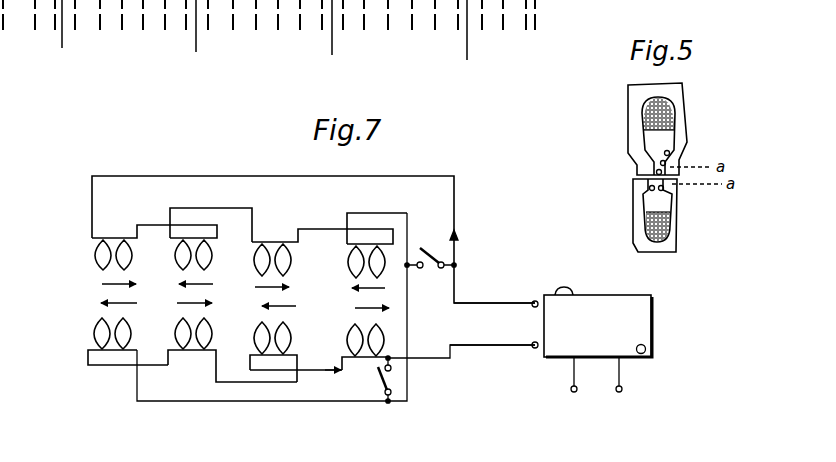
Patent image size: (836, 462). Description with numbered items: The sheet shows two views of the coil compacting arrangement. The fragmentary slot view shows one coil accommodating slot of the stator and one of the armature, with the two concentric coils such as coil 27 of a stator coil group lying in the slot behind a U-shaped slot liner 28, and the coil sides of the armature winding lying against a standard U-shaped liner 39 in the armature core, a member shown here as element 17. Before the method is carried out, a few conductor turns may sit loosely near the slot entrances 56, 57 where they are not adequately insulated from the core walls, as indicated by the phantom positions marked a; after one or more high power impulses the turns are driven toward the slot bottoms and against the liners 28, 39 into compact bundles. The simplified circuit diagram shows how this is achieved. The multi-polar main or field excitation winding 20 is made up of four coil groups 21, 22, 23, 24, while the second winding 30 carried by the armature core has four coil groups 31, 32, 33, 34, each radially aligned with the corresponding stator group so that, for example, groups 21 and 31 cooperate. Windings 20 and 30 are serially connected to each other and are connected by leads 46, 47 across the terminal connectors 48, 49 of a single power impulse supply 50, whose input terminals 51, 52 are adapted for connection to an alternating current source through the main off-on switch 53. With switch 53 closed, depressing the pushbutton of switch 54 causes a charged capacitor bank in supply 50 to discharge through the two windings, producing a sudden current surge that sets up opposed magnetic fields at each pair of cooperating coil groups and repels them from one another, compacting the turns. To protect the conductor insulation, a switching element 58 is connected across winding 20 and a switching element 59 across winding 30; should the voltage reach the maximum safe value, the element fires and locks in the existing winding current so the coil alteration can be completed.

In FIG. 5, the lower block / receiving member 17 is at (636, 186).
In FIG. 7, the main or field excitation winding 20 is at (86, 238).
In FIG. 7, the coil group 21 is at (115, 238).
In FIG. 7, the coil group 22 is at (192, 240).
In FIG. 7, the coil group 23 is at (274, 242).
In FIG. 7, the coil group 24 is at (367, 244).
In FIG. 5, the concentric coil 27 is at (676, 113).
In FIG. 5, the slot liner 28 is at (675, 136).
In FIG. 7, the second winding 30 is at (86, 335).
In FIG. 7, the coil group 31 is at (112, 352).
In FIG. 7, the coil group 32 is at (194, 352).
In FIG. 7, the coil group 33 is at (277, 357).
In FIG. 7, the coil group 34 is at (362, 359).
In FIG. 5, the slot liner 39 is at (668, 218).
In FIG. 7, the lead 46 is at (481, 302).
In FIG. 7, the lead 47 is at (490, 347).
In FIG. 7, the terminal connector 48 is at (535, 300).
In FIG. 7, the terminal connector 49 is at (534, 349).
In FIG. 7, the power impulse supply 50 is at (642, 322).
In FIG. 7, the input terminal 51 is at (572, 393).
In FIG. 7, the input terminal 52 is at (621, 393).
In FIG. 7, the main off-on switch 53 is at (646, 349).
In FIG. 7, the switch 54 is at (564, 291).
In FIG. 5, the slot entrance 56 is at (665, 170).
In FIG. 5, the slot entrance 57 is at (648, 191).
In FIG. 7, the switching element 58 is at (433, 246).
In FIG. 7, the switching element 59 is at (380, 385).